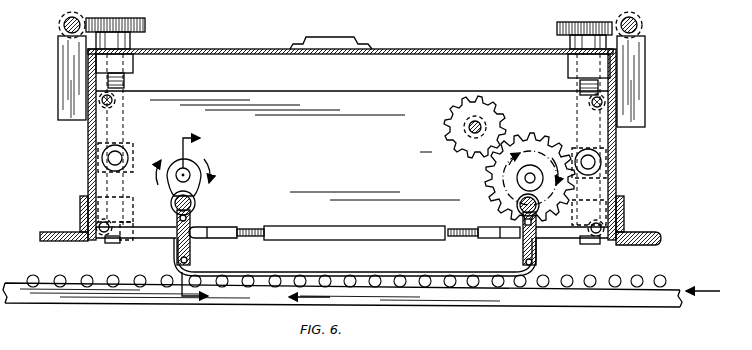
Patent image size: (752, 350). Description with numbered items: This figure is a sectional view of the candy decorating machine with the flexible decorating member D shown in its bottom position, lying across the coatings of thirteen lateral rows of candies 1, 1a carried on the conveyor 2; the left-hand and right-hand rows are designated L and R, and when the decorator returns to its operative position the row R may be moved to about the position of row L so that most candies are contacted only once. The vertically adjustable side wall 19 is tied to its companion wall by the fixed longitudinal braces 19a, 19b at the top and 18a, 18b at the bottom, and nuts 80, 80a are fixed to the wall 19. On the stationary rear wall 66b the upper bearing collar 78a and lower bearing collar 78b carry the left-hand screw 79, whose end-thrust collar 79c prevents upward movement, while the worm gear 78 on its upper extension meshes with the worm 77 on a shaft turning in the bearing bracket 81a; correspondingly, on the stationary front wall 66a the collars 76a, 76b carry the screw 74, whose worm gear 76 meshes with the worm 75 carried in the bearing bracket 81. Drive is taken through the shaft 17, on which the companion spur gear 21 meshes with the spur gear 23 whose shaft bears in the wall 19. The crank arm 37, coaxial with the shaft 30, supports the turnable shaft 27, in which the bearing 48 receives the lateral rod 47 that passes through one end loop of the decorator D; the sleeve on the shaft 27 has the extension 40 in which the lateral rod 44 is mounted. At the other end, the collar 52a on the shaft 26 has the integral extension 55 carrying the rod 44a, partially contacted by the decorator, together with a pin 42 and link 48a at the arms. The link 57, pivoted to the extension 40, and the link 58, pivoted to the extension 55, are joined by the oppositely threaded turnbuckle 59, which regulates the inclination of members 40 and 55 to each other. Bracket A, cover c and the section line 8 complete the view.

The candy 1 is at (640, 277).
The candy 1a is at (57, 275).
The conveyor 2 is at (665, 292).
The pulley 8 is at (256, 221).
The shaft 17 is at (472, 127).
The longitudinal bar or brace 18a is at (101, 233).
The longitudinal bar or brace 18b is at (625, 228).
The vertically adjustable side wall 19 is at (292, 100).
The longitudinal bar or brace 19a is at (103, 100).
The longitudinal bar or brace 19b is at (605, 103).
The companion spur gear 21 is at (455, 108).
The spur gear 23 is at (524, 140).
The shaft 26 is at (517, 204).
The turnable shaft 27 is at (195, 196).
The shaft 30 is at (187, 174).
The crank arm 37 is at (197, 177).
The extension 40 is at (177, 248).
The pin 42 is at (178, 219).
The lateral rod 44 is at (191, 262).
The rod 44a is at (525, 263).
The lateral rod 47 is at (522, 222).
The bearing 48 is at (195, 206).
The right link 48a is at (517, 211).
The collar 52a is at (515, 197).
The extension 55 is at (537, 252).
The link 57 is at (222, 228).
The link 58 is at (498, 237).
The turnbuckle 59 is at (362, 223).
The stationary front wall 66a is at (618, 177).
The stationary rear wall 66b is at (88, 140).
The screw 74 is at (577, 110).
The worm 75 is at (642, 24).
The worm gear 76 is at (567, 22).
The bearing collar 76a is at (568, 68).
The bearing collar 76b is at (569, 234).
The worm 77 is at (60, 17).
The worm gear 78 is at (141, 19).
The bearing collar 78a is at (133, 64).
The bearing collar 78b is at (137, 196).
The screw 79 is at (124, 81).
The end-thrust collar 79c is at (127, 240).
The nut 80 is at (131, 145).
The nut 80a is at (618, 148).
The bearing bracket 81 is at (640, 112).
The bearing bracket 81a is at (67, 61).
The support bracket A is at (55, 214).
The cover c is at (393, 53).
The decorating member D is at (323, 276).
The left-hand lateral row L is at (218, 300).
The right-hand lateral row R is at (492, 283).